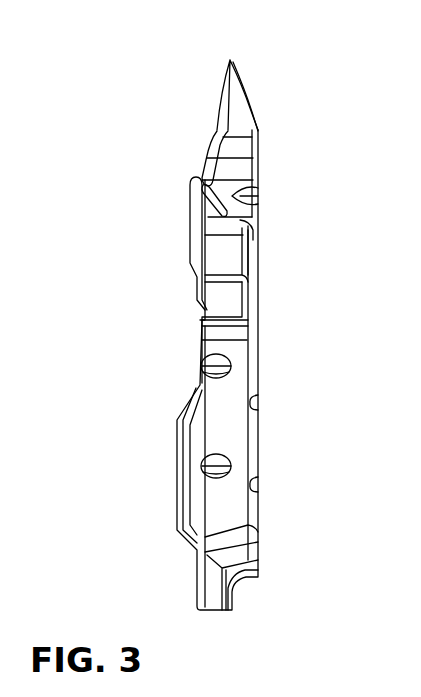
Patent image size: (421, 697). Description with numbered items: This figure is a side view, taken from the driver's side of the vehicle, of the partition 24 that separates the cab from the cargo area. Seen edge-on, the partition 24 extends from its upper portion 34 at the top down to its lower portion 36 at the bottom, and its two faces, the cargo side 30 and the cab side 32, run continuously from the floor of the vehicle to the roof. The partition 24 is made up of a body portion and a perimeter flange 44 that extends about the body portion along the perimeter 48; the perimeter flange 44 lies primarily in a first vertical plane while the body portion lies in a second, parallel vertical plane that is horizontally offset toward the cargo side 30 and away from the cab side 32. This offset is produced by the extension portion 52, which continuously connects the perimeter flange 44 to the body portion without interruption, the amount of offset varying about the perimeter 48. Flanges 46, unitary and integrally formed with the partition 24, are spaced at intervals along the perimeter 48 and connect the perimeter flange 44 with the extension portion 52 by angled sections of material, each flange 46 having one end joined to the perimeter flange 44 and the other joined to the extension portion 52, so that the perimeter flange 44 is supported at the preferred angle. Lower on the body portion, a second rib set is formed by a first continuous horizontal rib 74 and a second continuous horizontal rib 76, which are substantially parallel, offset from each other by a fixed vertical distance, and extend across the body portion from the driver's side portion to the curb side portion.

The perimeter 48 is at (233, 58).
The partition 24 is at (247, 108).
The upper portion 34 is at (190, 140).
The cab side 32 is at (176, 199).
The cargo side 30 is at (280, 193).
The extension portion 52 is at (222, 253).
The perimeter flange 44 is at (225, 343).
The flanges 46 is at (232, 367).
The first continuous horizontal rib 74 is at (258, 403).
The second continuous horizontal rib 76 is at (258, 487).
The lower portion 36 is at (157, 476).